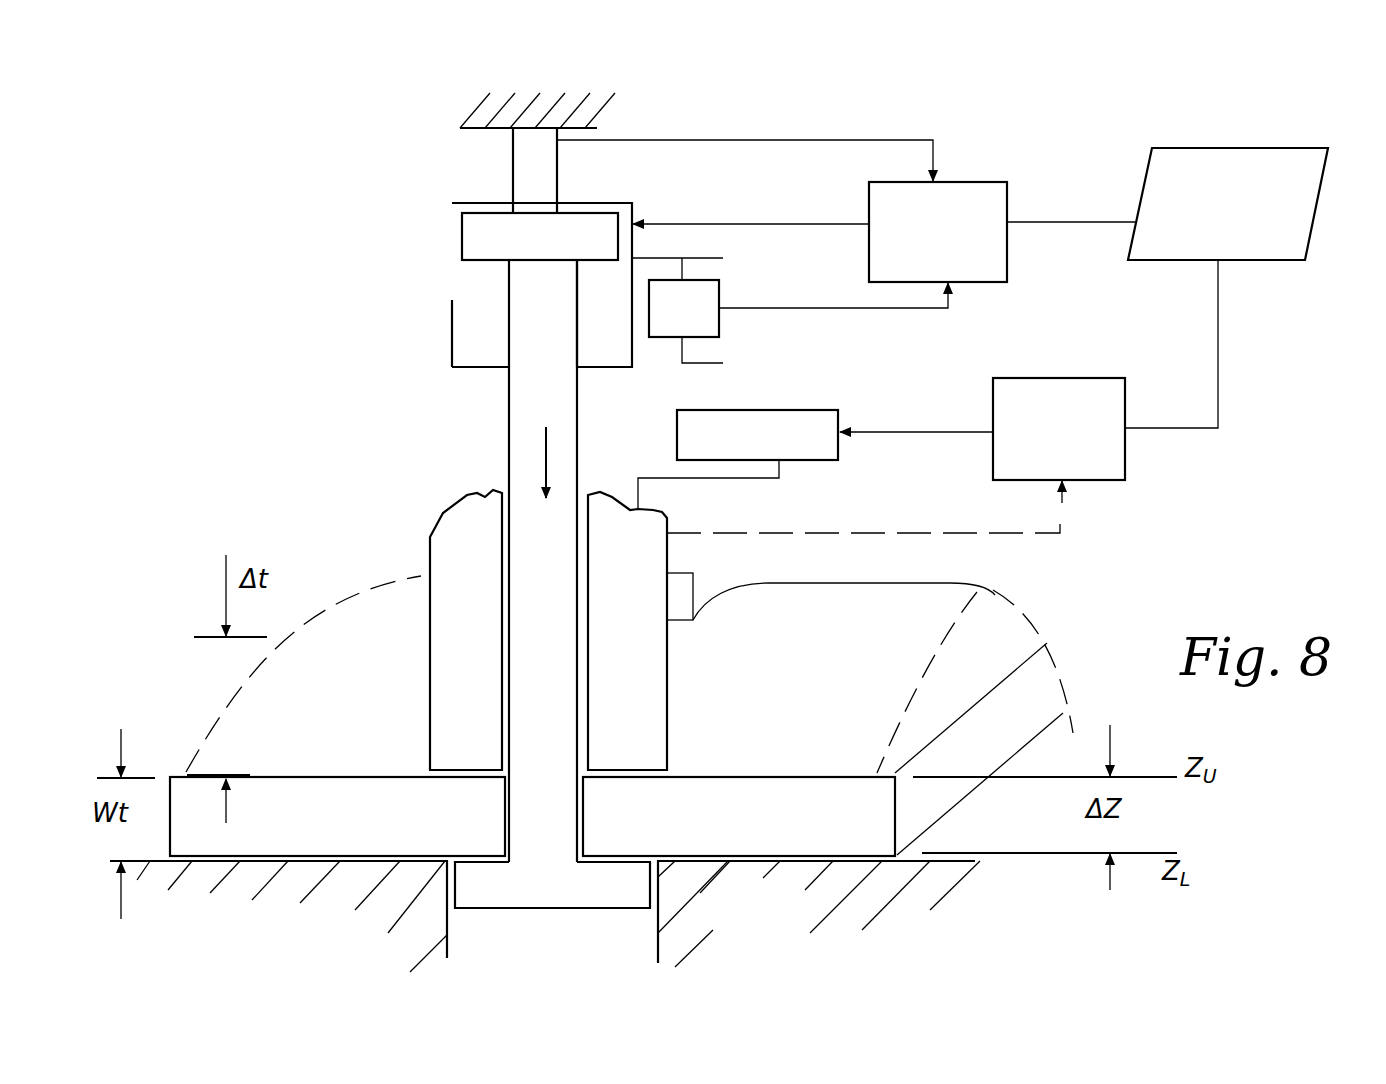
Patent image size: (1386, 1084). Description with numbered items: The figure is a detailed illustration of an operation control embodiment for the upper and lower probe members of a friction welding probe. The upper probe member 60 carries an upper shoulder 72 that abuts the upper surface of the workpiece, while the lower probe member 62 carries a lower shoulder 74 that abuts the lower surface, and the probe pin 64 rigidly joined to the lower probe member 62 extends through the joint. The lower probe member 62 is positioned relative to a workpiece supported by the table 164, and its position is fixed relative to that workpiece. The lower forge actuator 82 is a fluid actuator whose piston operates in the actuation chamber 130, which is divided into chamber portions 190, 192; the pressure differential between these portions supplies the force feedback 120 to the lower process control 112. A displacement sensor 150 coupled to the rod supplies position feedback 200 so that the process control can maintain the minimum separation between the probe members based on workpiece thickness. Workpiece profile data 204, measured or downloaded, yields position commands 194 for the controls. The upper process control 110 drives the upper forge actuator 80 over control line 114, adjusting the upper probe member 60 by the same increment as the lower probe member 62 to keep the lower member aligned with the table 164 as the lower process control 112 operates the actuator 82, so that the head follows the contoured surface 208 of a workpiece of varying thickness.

The displacement sensor 150 is at (513, 175).
The chamber portion 190 is at (575, 207).
The lower forge actuator 82 is at (452, 278).
The actuation chamber 130 is at (452, 332).
The chamber portion 192 is at (593, 355).
The probe pin 64 is at (566, 684).
The position feedback 200 is at (747, 140).
The control line 114 is at (718, 224).
The force feedback 120 is at (815, 305).
The lower process control 112 is at (971, 178).
The workpiece profile data 204 is at (1172, 147).
The position command 194 is at (1293, 148).
The upper process control 110 is at (1085, 375).
The upper forge actuator 80 is at (843, 411).
The upper probe member 60 is at (482, 670).
The upper shoulder 72 is at (640, 768).
The surface 208 is at (884, 672).
The lower shoulder 74 is at (620, 868).
The lower probe member 62 is at (528, 887).
The table 164 is at (800, 924).